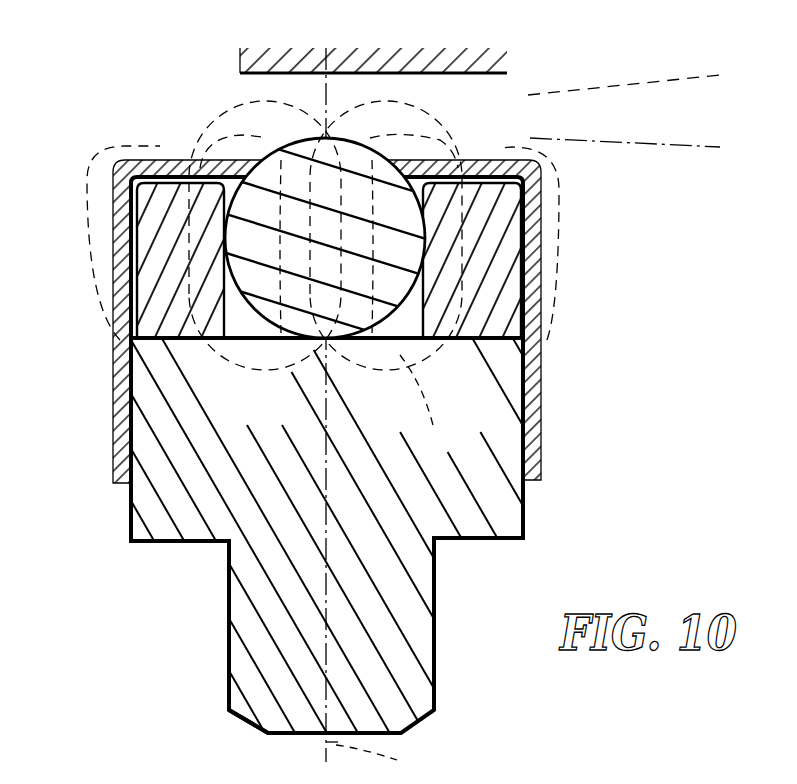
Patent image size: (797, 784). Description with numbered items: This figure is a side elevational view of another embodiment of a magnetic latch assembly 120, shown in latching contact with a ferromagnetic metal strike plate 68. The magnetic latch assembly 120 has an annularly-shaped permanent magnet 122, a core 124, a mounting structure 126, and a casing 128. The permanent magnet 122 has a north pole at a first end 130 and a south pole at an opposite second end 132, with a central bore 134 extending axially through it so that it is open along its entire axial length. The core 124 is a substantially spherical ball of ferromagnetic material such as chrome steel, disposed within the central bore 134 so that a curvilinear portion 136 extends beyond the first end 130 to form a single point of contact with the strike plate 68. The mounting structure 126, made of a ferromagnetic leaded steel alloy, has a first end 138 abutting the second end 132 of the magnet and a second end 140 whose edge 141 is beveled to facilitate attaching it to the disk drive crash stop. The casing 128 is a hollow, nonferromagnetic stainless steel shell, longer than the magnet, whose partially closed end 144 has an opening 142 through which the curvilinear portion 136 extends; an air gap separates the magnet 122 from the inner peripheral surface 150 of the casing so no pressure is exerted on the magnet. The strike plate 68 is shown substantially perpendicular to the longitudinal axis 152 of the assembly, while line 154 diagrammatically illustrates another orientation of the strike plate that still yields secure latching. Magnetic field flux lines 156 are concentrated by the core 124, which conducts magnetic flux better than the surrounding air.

The strike plate 68 is at (447, 75).
The magnetic latch assembly 120 is at (565, 519).
The permanent magnet 122 is at (143, 338).
The core 124 is at (358, 328).
The mounting structure 126 is at (475, 525).
The casing 128 is at (539, 452).
The first end 130 is at (480, 210).
The second end 132 is at (492, 345).
The central bore 134 is at (247, 328).
The curvilinear portion 136 is at (334, 140).
The first end 138 is at (150, 330).
The second end 140 is at (297, 735).
The edge 141 is at (240, 720).
The opening 142 is at (248, 160).
The partially closed end 144 is at (166, 162).
The inner peripheral surface 150 is at (138, 360).
The longitudinal axis 152 is at (695, 80).
The line 154 is at (690, 150).
The magnetic field flux lines 156 is at (437, 396).